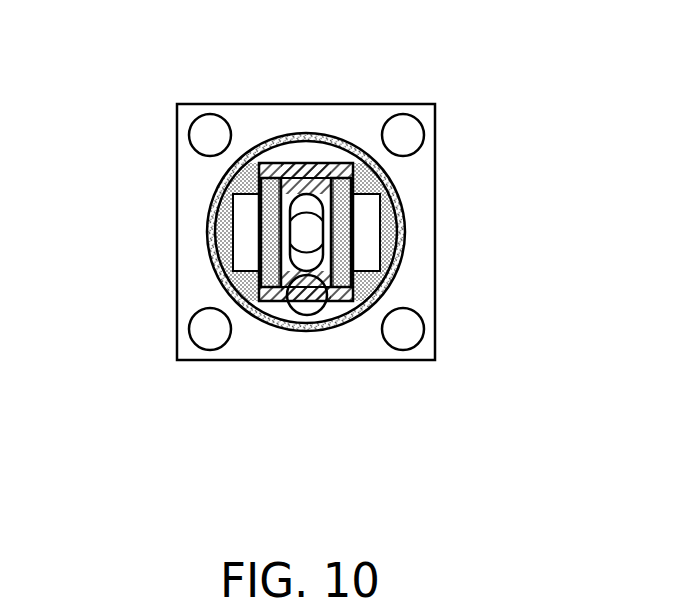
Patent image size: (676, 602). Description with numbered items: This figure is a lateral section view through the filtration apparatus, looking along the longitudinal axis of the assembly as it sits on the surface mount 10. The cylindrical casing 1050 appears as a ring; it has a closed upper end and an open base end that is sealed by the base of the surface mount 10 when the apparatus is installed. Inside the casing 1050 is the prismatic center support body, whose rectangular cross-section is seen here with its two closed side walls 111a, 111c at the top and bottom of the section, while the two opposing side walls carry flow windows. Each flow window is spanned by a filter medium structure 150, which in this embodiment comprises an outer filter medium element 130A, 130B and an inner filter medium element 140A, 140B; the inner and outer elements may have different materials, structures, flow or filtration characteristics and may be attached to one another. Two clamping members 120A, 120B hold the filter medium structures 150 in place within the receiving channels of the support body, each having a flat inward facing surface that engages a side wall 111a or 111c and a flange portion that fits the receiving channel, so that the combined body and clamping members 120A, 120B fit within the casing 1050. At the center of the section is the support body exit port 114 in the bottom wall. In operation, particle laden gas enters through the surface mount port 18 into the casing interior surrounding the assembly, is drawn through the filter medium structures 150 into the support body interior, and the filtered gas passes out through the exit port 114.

The surface mount 10 is at (178, 263).
The surface mount port 18 is at (340, 313).
The cylindrical casing 1050 is at (275, 135).
The support body exit port 114 is at (304, 208).
The side wall 111a is at (343, 163).
The side wall 111c is at (271, 311).
The clamping member 120A is at (230, 170).
The clamping member 120B is at (382, 173).
The outer filter medium element 130A is at (260, 255).
The outer filter medium element 130B is at (349, 259).
The inner filter medium element 140A is at (312, 277).
The inner filter medium element 140B is at (285, 278).
The filter medium structure 150 is at (259, 221).